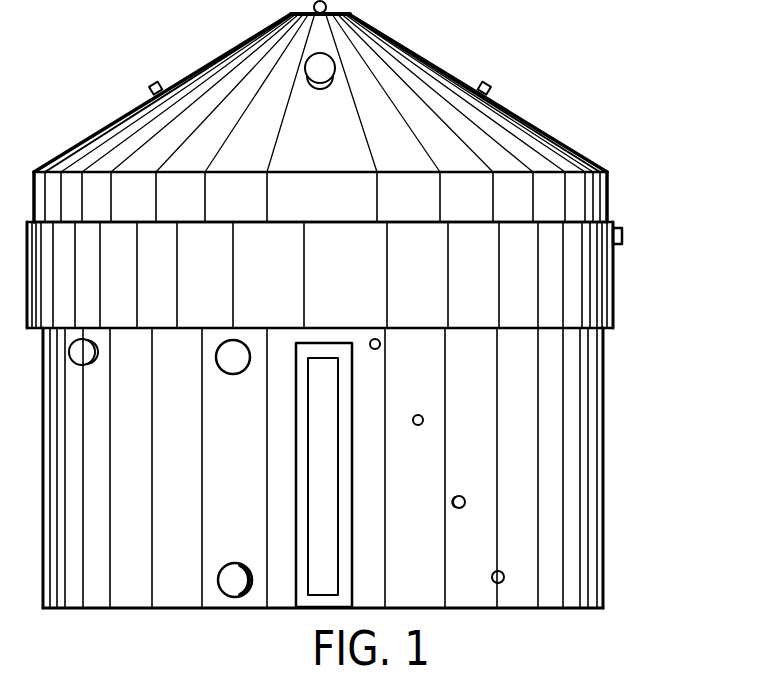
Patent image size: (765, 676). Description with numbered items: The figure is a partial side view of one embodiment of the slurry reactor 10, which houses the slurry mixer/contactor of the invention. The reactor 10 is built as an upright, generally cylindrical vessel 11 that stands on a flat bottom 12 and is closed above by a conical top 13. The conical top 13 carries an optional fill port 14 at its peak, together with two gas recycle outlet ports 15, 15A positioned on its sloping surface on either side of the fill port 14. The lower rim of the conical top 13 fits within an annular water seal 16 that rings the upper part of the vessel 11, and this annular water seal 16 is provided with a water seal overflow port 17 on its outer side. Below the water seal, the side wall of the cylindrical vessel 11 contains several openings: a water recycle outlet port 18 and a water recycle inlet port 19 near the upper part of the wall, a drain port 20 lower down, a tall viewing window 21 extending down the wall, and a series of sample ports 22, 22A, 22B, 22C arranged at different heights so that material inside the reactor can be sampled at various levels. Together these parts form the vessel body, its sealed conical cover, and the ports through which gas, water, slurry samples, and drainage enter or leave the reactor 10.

The slurry reactor 10 is at (172, 45).
The cylindrical vessel 11 is at (603, 426).
The flat bottom 12 is at (568, 610).
The conical top 13 is at (596, 164).
The fill port 14 is at (319, 87).
The gas recycle outlet port 15 is at (153, 88).
The gas recycle outlet port 15A is at (487, 85).
The annular water seal 16 is at (602, 285).
The water seal overflow port 17 is at (624, 235).
The water recycle outlet port 18 is at (233, 363).
The water recycle inlet port 19 is at (86, 367).
The drain port 20 is at (238, 566).
The viewing window 21 is at (321, 438).
The sample port 22 is at (380, 344).
The sample port 22A is at (414, 424).
The sample port 22B is at (452, 506).
The sample port 22C is at (491, 576).